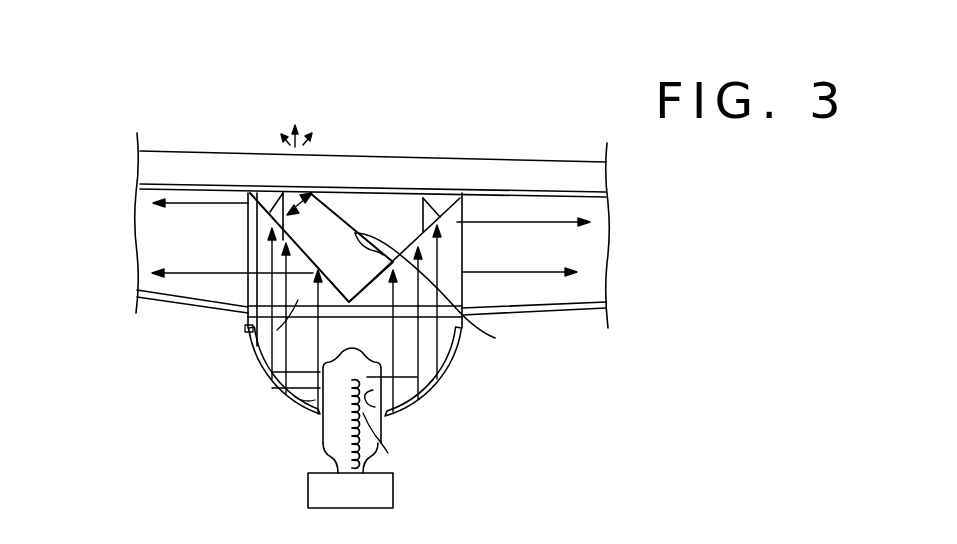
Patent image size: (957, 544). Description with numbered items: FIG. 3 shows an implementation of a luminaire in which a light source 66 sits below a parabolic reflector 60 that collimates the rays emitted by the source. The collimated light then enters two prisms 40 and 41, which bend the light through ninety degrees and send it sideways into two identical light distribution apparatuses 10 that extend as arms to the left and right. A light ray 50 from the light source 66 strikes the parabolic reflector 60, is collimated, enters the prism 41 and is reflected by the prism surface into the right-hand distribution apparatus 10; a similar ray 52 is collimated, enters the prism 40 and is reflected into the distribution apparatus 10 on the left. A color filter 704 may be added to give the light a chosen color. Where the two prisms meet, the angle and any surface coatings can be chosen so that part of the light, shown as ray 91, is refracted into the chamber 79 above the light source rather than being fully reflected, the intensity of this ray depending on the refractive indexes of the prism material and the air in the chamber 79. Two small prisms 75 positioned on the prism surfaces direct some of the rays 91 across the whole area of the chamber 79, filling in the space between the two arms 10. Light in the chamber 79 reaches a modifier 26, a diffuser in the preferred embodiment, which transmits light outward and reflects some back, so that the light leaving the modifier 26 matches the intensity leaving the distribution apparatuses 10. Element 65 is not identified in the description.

The light distribution apparatus 10 is at (173, 142).
The modifier 26 is at (525, 180).
The small prism 75 is at (270, 207).
The chamber 79 is at (335, 198).
The light ray 91 is at (440, 276).
The prism 40 is at (245, 328).
The color filter 704 is at (307, 312).
The light ray 52 is at (298, 398).
The parabolic reflector 60 is at (444, 381).
The prism 41 is at (396, 390).
The light ray 50 is at (383, 410).
The solenoid 65 is at (322, 444).
The light source 66 is at (396, 446).